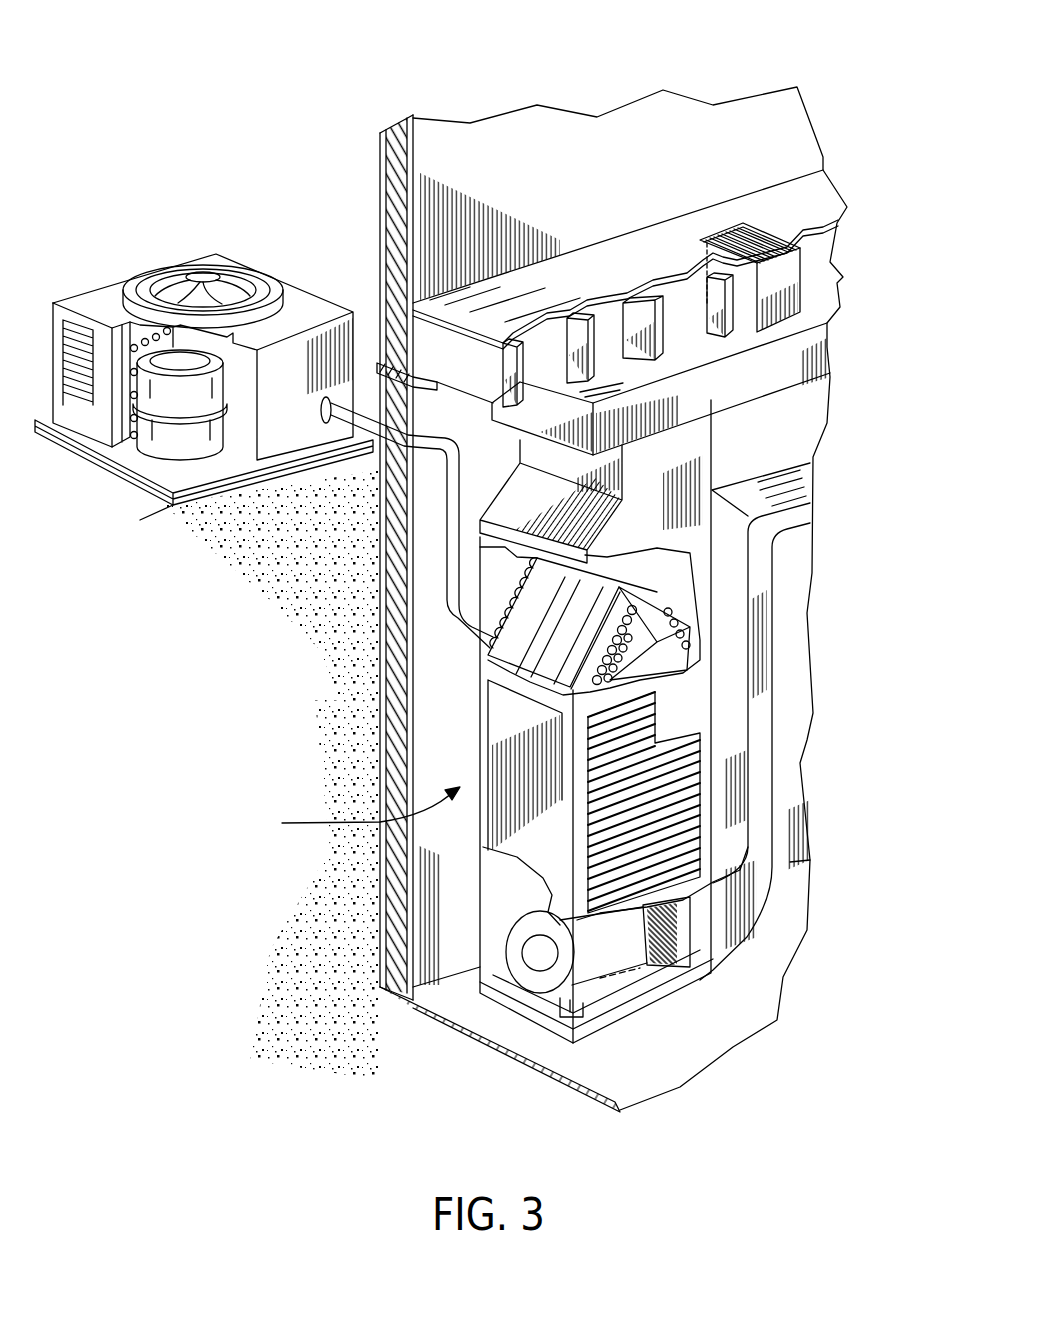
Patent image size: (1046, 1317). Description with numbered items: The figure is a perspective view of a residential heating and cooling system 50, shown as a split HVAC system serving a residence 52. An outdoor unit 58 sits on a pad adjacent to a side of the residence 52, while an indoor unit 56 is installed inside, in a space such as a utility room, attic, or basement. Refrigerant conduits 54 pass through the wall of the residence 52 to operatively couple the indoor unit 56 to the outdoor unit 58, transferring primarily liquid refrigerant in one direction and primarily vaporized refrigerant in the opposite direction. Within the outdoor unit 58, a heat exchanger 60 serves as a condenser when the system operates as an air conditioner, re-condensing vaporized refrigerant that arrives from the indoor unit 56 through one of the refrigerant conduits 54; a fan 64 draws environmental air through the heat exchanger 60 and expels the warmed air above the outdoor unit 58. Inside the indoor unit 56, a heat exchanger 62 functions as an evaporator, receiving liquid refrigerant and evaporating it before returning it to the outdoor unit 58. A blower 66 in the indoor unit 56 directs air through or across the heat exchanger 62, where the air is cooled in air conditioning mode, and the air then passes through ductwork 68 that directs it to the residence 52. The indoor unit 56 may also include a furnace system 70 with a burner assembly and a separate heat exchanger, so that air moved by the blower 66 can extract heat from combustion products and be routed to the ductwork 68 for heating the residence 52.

The residential heating and cooling system 50 is at (203, 87).
The residence 52 is at (520, 137).
The refrigerant conduits 54 is at (430, 530).
The indoor unit 56 is at (356, 813).
The outdoor unit 58 is at (163, 257).
The heat exchanger 60 is at (137, 340).
The heat exchanger 62 is at (543, 650).
The fan 64 is at (222, 266).
The blower 66 is at (533, 977).
The ductwork 68 is at (780, 303).
The furnace system 70 is at (495, 733).